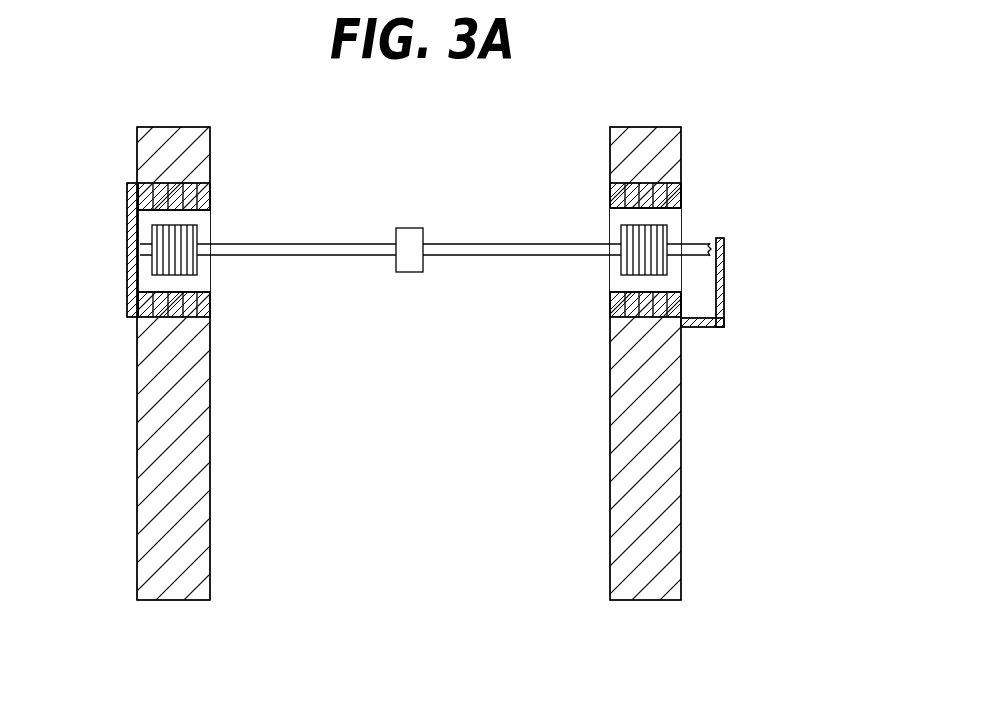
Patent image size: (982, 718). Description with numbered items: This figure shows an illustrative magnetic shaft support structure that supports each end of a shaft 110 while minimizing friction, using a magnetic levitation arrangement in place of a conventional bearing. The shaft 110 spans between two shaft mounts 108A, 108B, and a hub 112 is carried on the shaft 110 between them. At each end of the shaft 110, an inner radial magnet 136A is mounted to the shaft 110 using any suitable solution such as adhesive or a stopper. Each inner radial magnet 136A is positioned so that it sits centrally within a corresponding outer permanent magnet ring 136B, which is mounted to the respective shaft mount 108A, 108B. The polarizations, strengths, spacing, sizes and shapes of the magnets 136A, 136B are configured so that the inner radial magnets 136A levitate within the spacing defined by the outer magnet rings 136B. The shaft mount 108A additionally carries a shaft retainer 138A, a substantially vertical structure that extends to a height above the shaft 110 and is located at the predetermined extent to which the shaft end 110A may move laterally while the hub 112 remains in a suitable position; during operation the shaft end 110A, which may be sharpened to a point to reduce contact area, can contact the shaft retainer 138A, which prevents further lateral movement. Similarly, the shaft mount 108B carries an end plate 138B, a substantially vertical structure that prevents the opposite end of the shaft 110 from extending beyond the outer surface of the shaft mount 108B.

The shaft mount 108A is at (610, 470).
The shaft mount 108B is at (210, 470).
The shaft 110 is at (507, 258).
The shaft end 110A is at (710, 245).
The hub 112 is at (405, 268).
The inner radial magnet 136A is at (200, 232).
The outer permanent magnet ring 136B is at (210, 193).
The shaft retainer 138A is at (724, 285).
The end plate 138B is at (133, 237).